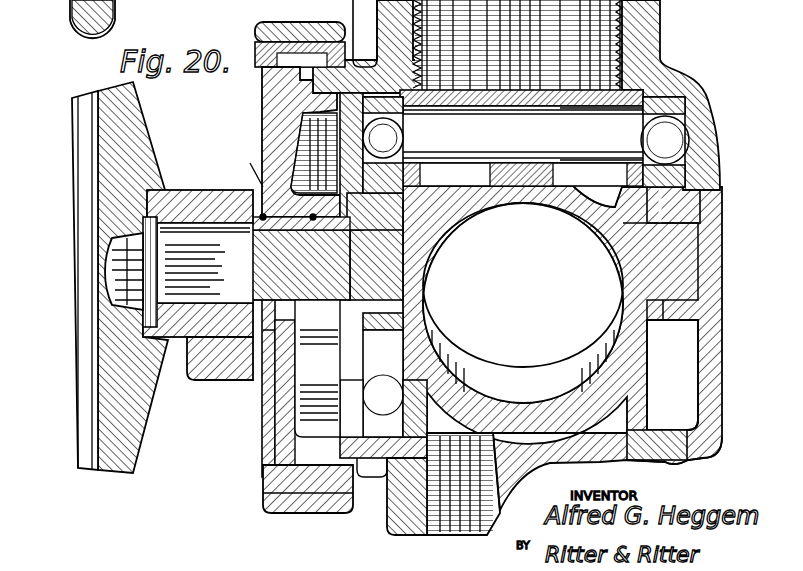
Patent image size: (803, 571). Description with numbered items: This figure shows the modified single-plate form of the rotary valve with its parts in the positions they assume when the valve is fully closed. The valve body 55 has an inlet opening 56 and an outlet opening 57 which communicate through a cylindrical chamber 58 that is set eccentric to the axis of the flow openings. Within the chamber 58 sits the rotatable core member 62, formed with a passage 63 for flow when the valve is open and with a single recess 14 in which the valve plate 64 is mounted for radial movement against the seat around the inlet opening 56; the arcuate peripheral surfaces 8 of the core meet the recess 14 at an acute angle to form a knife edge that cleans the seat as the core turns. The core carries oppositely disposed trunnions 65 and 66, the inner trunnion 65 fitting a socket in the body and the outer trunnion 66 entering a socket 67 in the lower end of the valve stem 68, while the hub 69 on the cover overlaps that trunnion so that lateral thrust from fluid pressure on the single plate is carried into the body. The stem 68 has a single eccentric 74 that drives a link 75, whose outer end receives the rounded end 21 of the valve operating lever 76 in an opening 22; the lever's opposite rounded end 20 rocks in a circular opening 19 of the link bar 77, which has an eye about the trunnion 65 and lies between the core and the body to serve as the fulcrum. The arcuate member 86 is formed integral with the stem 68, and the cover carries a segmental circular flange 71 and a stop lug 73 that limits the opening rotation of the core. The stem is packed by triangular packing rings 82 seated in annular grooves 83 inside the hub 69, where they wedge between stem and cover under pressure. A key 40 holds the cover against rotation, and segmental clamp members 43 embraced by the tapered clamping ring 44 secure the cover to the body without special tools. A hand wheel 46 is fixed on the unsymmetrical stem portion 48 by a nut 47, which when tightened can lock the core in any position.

The arcuate peripheral surface 8 is at (637, 430).
The recess 14 is at (462, 192).
The circular opening 19 is at (687, 168).
The lever end 20 is at (670, 137).
The lever end 21 is at (392, 140).
The opening 22 is at (357, 552).
The key 40 is at (263, 70).
The segmental clamp member 43 is at (263, 113).
The clamping ring 44 is at (273, 512).
The hand wheel 46 is at (78, 207).
The nut 47 is at (113, 300).
The stem portion 48 is at (193, 293).
The valve body 55 is at (722, 318).
The inlet opening 56 is at (628, 25).
The outlet opening 57 is at (437, 543).
The cylindrical chamber 58 is at (673, 463).
The rotatable core member 62 is at (643, 370).
The passage 63 is at (518, 380).
The valve plate 64 is at (527, 100).
The trunnion 65 is at (687, 257).
The trunnion 66 is at (350, 285).
The socket 67 is at (330, 300).
The valve stem 68 is at (267, 343).
The hub 69 is at (314, 156).
The segmental circular flange 71 is at (355, 398).
The stop lug 73 is at (366, 46).
The eccentric 74 is at (395, 220).
The link 75 is at (388, 284).
The valve operating lever 76 is at (599, 134).
The link bar 77 is at (703, 200).
The packing ring 82 is at (263, 200).
The annular groove 83 is at (250, 385).
The arcuate member 86 is at (357, 150).